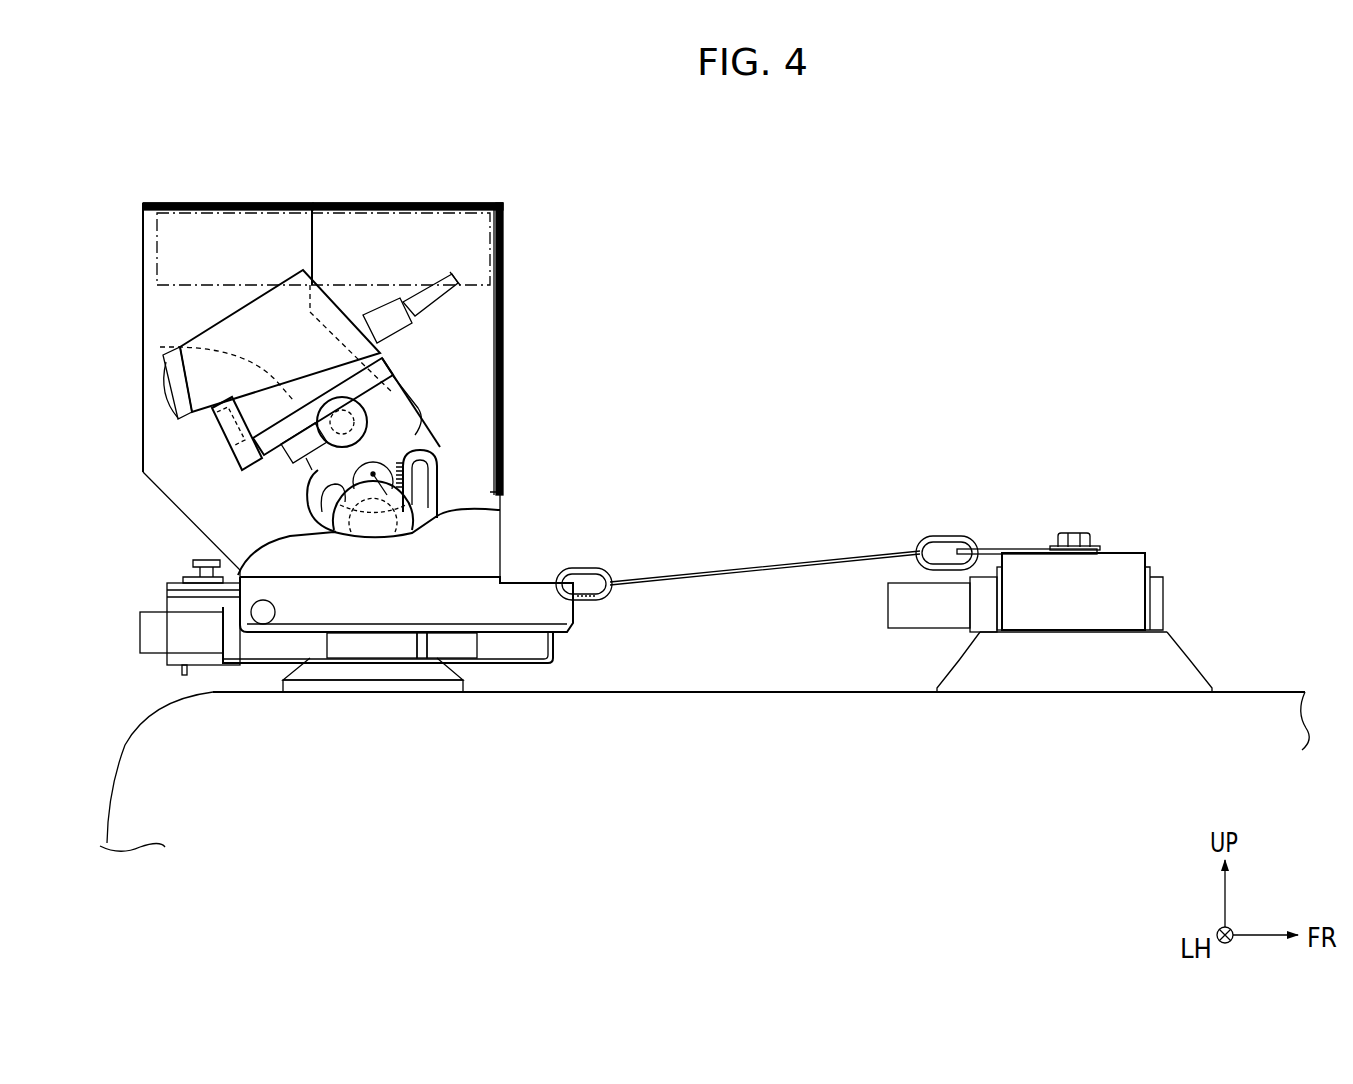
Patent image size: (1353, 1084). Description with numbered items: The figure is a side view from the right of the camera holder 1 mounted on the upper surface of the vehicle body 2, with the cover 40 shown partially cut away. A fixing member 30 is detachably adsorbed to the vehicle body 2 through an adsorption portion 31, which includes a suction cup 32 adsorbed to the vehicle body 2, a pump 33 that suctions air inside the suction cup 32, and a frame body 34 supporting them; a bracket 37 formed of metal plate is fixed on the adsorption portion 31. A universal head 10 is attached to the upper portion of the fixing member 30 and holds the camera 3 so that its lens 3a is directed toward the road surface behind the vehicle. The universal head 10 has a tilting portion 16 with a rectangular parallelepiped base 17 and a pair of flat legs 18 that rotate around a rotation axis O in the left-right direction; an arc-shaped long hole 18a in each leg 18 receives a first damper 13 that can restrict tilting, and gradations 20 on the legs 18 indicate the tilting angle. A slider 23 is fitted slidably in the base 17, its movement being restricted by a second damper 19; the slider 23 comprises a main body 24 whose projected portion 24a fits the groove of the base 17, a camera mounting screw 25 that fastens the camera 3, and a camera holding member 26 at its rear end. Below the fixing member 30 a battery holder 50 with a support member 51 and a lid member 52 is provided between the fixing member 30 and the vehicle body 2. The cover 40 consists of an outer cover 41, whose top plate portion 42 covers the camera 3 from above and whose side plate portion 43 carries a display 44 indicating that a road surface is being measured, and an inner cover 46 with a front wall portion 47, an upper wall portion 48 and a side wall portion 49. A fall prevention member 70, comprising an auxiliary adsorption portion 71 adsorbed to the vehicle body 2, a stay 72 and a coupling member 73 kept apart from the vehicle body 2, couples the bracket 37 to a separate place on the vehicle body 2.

The camera holder 1 is at (1108, 174).
The vehicle body 2 is at (1266, 688).
The camera 3 is at (200, 326).
The lens 3a is at (167, 377).
The universal head 10 is at (388, 464).
The first damper 13 is at (417, 518).
The tilting portion 16 is at (447, 445).
The base 17 is at (378, 386).
The leg 18 is at (368, 410).
The long hole 18a is at (408, 478).
The second damper 19 is at (395, 394).
The gradations 20 is at (302, 509).
The slider 23 is at (213, 444).
The main body 24 is at (253, 436).
The projected portion 24a is at (273, 455).
The camera mounting screw 25 is at (160, 347).
The camera holding member 26 is at (215, 418).
The fixing member 30 is at (427, 773).
The adsorption portion 31 is at (394, 697).
The suction cup 32 is at (450, 687).
The pump 33 is at (140, 640).
The frame body 34 is at (403, 652).
The bracket 37 is at (365, 636).
The cover 40 is at (557, 130).
The outer cover 41 is at (455, 192).
The top plate portion 42 is at (218, 203).
The side plate portion 43 is at (143, 222).
The display 44 is at (270, 217).
The inner cover 46 is at (512, 218).
The front wall portion 47 is at (503, 259).
The upper wall portion 48 is at (390, 203).
The side wall portion 49 is at (487, 300).
The battery holder 50 is at (260, 668).
The support member 51 is at (497, 667).
The lid member 52 is at (190, 575).
The fall prevention member 70 is at (1105, 506).
The auxiliary adsorption portion 71 is at (1150, 550).
The stay 72 is at (1008, 549).
The coupling member 73 is at (760, 562).
The rotation axis O is at (423, 513).